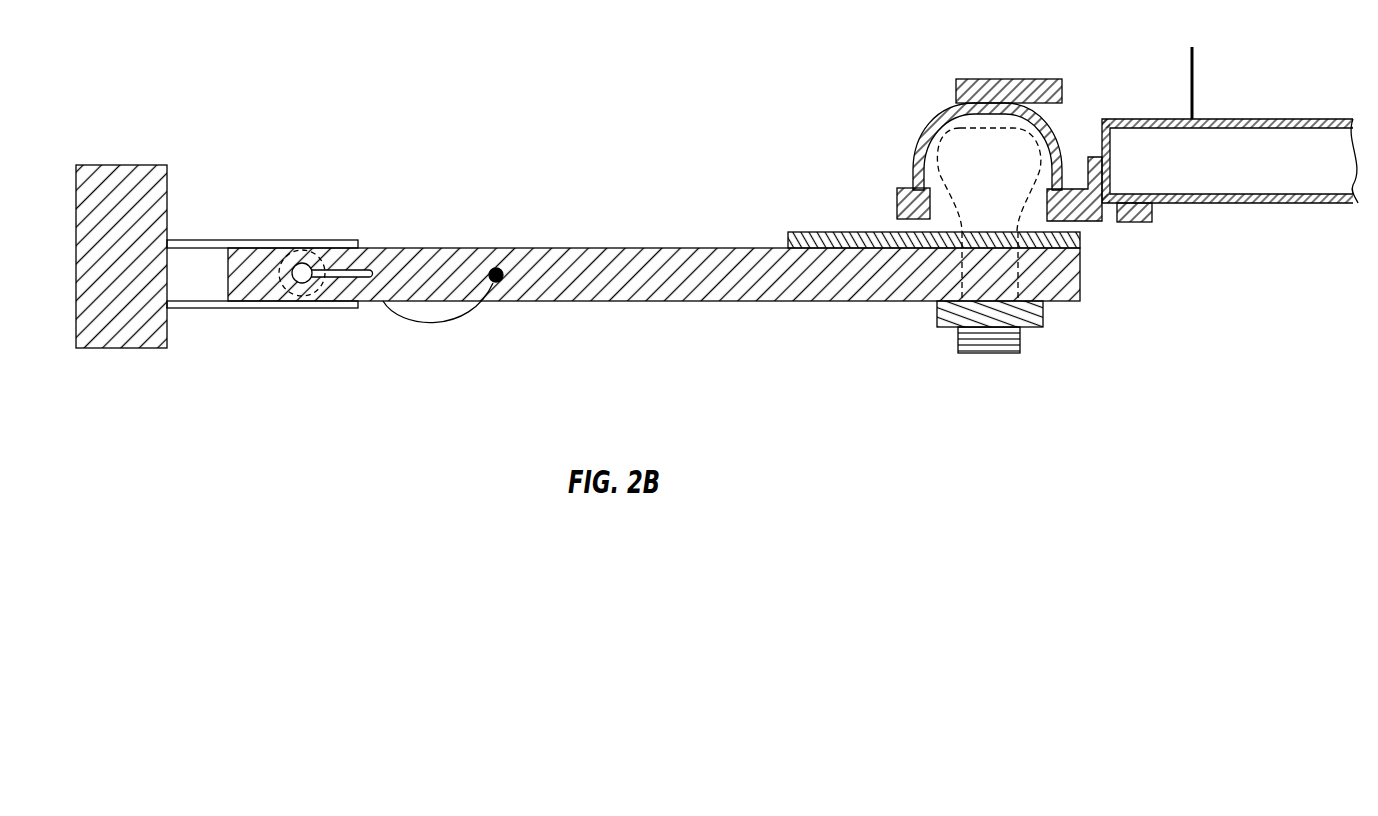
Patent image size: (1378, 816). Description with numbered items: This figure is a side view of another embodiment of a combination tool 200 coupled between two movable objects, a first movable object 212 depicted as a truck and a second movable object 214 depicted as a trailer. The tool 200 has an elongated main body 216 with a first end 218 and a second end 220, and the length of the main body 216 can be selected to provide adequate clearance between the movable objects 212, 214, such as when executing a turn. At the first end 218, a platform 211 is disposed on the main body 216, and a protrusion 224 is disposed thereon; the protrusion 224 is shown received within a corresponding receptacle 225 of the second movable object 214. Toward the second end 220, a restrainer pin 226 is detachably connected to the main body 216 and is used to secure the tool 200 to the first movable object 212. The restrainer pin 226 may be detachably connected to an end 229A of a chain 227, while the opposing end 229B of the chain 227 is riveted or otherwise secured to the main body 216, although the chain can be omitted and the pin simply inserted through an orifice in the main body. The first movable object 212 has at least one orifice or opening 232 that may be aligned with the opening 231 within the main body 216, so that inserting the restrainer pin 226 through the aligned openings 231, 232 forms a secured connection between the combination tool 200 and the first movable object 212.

The combination tool 200 is at (199, 84).
The first movable object 212 is at (122, 342).
The orifice or opening 232 is at (290, 264).
The opening 231 is at (292, 300).
The main body 216 is at (628, 248).
The second end 220 is at (373, 278).
The end of chain 229A is at (299, 295).
The restrainer pin 226 is at (307, 263).
The opposing end of chain 229B is at (500, 282).
The chain 227 is at (437, 322).
The platform 211 is at (818, 232).
The first end 218 is at (893, 301).
The receptacle 225 is at (934, 122).
The protrusion 224 is at (1000, 150).
The second movable object 214 is at (1260, 190).